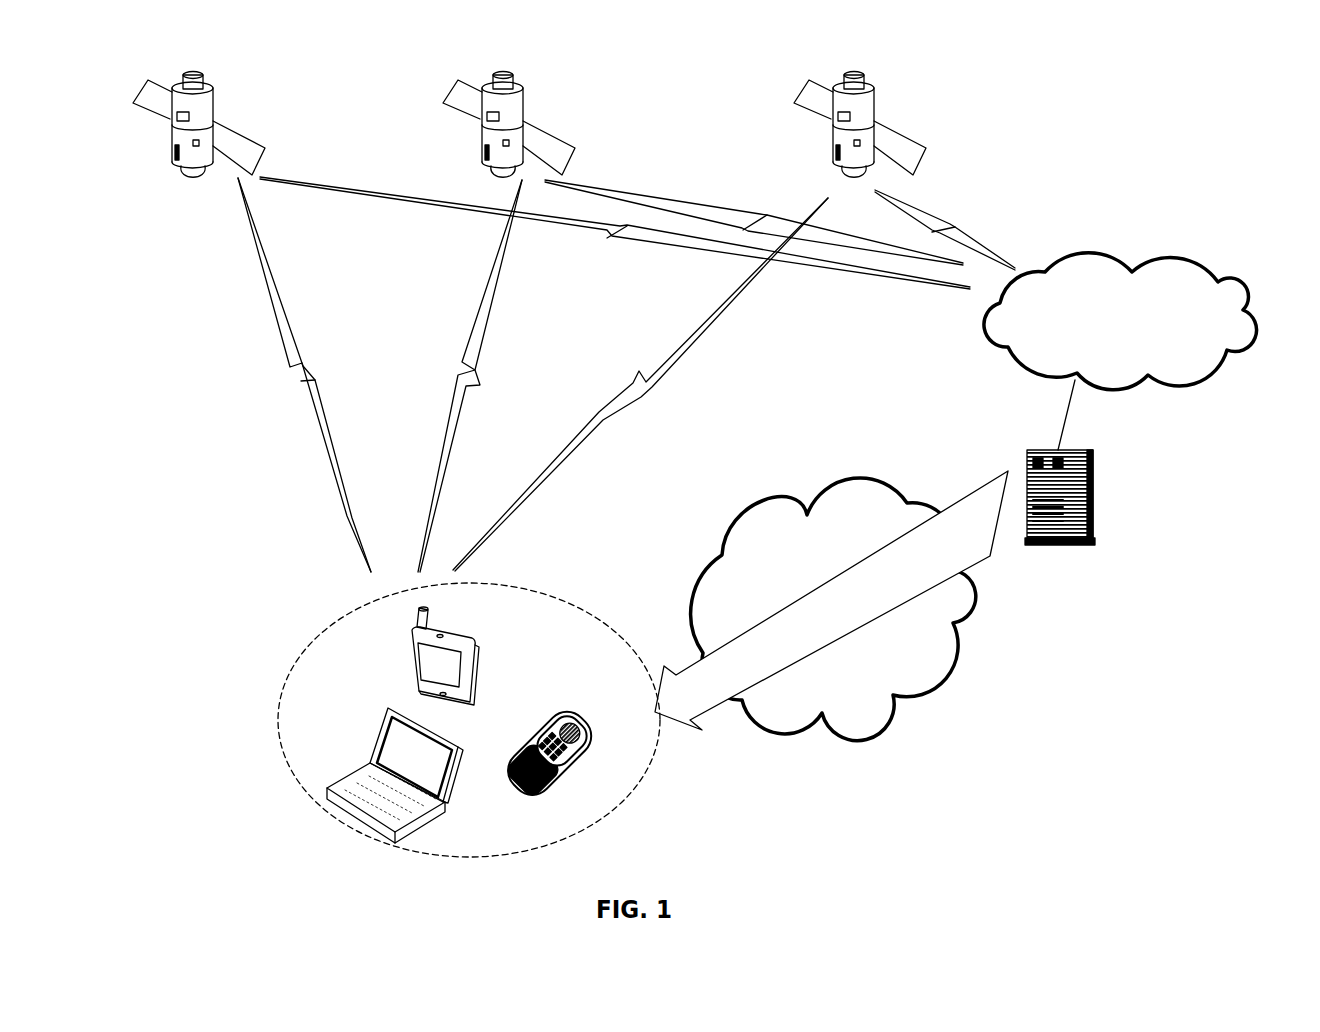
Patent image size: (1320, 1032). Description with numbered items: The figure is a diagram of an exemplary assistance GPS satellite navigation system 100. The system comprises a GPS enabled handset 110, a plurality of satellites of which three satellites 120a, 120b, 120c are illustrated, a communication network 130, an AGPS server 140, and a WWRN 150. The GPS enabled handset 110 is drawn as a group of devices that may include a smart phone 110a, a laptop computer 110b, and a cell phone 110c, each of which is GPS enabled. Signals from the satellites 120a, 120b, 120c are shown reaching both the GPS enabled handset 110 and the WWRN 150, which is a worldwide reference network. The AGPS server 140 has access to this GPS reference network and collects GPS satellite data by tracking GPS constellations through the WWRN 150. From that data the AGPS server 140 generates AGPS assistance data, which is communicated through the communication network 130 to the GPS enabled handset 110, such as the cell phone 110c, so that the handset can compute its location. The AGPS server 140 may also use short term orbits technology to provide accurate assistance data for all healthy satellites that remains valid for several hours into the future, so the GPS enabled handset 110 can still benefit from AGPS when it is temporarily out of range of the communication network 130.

The AGPS satellite navigation system 100 is at (1180, 96).
The GPS enabled handset 110 is at (317, 641).
The smart phone 110a is at (508, 665).
The laptop computer 110b is at (388, 704).
The cell phone 110c is at (546, 795).
The satellite 120a is at (262, 136).
The satellite 120b is at (562, 129).
The satellite 120c is at (907, 127).
The communication network 130 is at (898, 707).
The AGPS server 140 is at (1094, 450).
The WWRN 150 is at (1218, 240).